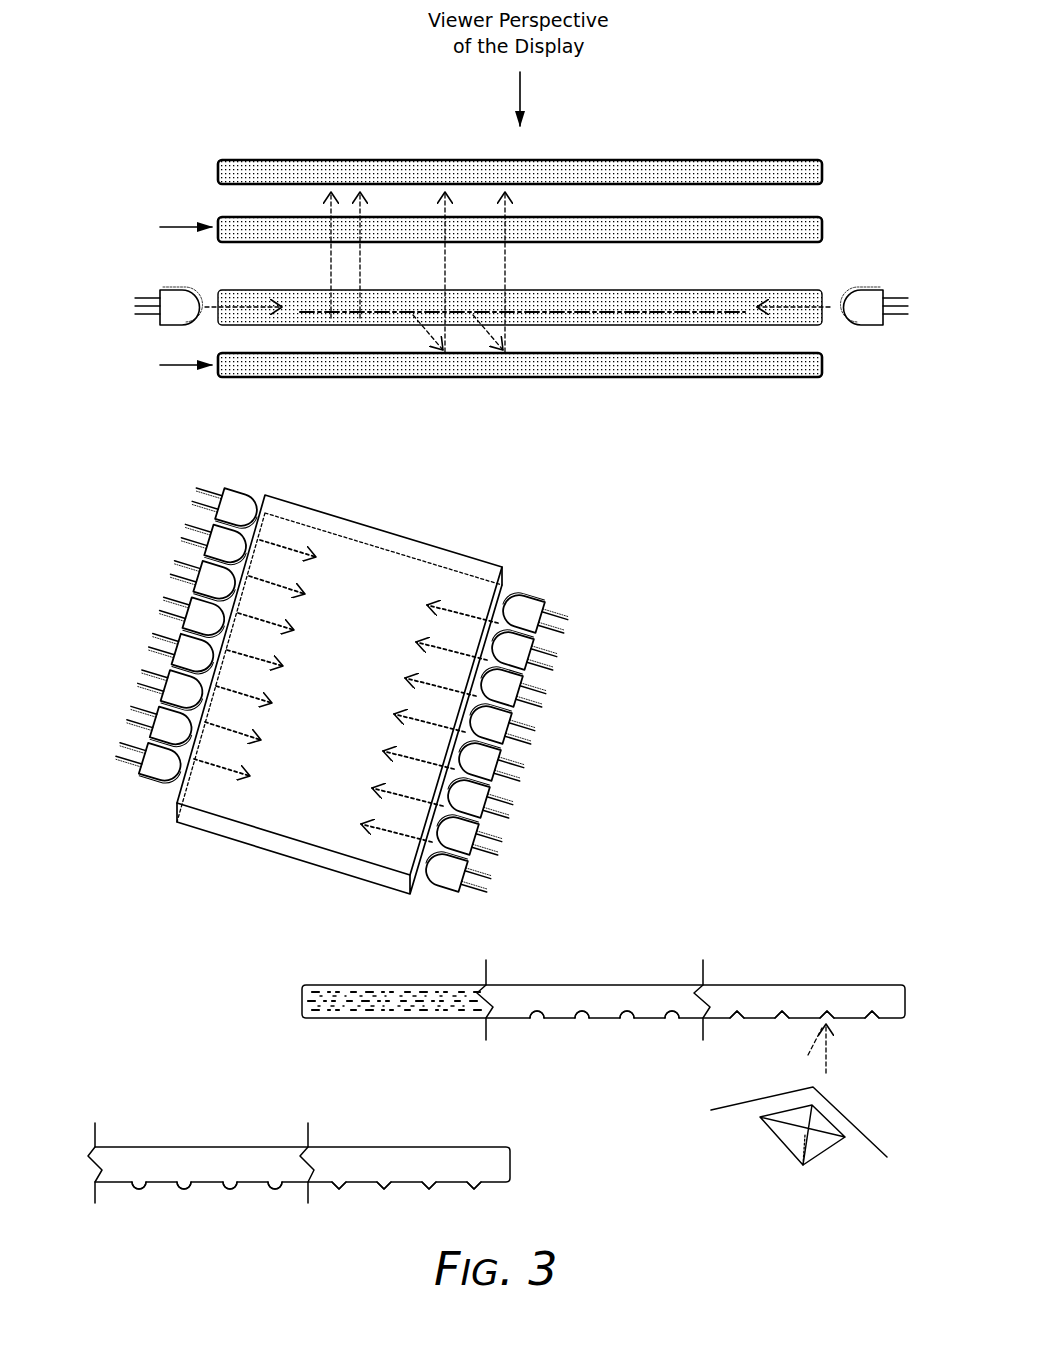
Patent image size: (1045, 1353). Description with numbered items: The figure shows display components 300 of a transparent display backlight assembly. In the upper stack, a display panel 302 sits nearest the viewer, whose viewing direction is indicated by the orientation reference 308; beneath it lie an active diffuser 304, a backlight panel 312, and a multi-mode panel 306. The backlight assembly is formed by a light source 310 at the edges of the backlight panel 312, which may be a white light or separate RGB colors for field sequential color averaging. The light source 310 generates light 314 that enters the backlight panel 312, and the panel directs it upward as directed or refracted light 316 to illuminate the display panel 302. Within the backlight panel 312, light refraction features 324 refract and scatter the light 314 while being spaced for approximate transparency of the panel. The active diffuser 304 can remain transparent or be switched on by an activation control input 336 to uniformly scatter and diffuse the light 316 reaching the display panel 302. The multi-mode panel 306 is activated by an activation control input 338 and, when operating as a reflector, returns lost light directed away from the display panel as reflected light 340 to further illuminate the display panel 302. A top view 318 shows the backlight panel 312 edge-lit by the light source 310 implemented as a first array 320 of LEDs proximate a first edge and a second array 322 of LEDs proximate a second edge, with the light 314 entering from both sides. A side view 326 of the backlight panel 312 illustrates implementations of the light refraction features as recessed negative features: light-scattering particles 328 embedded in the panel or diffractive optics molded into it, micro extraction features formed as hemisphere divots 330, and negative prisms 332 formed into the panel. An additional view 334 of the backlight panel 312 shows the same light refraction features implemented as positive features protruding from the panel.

The display components 300 is at (685, 77).
The display panel 302 is at (680, 160).
The active diffuser 304 is at (760, 217).
The multi-mode panel 306 is at (617, 377).
The orientation reference 308 is at (578, 103).
The light source 310 is at (185, 279).
The backlight panel 312 is at (752, 325).
The light 314 is at (243, 303).
The directed or refracted light 316 is at (318, 200).
The top view 318 is at (362, 660).
The first array 320 is at (180, 510).
The second array 322 is at (541, 796).
The light refraction features 324 is at (557, 308).
The side view 326 is at (565, 1020).
The light-scattering particles 328 is at (340, 983).
The hemisphere divots 330 is at (580, 1022).
The negative prisms 332 is at (782, 1022).
The additional view 334 is at (262, 1096).
The activation control input 336 is at (138, 235).
The activation control input 338 is at (138, 373).
The reflected light 340 is at (458, 337).